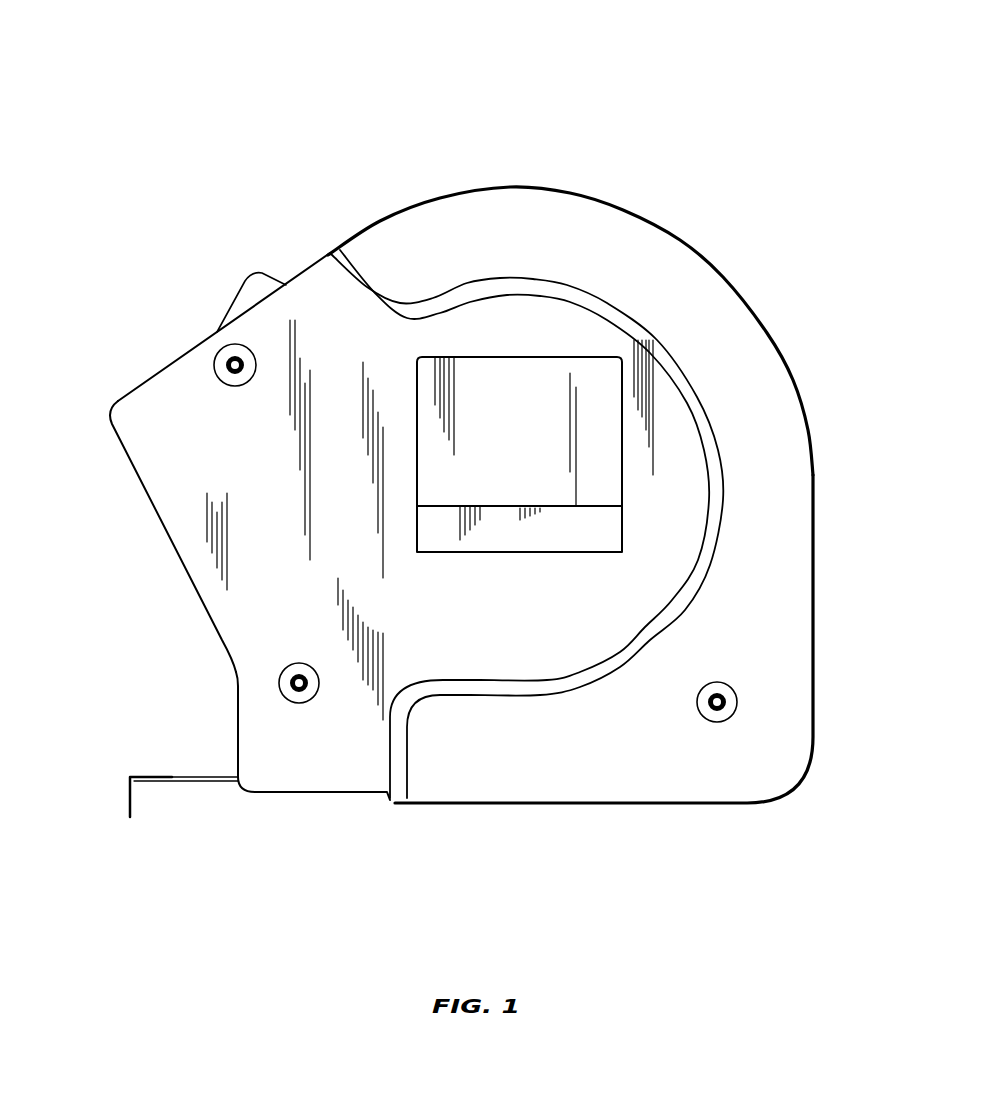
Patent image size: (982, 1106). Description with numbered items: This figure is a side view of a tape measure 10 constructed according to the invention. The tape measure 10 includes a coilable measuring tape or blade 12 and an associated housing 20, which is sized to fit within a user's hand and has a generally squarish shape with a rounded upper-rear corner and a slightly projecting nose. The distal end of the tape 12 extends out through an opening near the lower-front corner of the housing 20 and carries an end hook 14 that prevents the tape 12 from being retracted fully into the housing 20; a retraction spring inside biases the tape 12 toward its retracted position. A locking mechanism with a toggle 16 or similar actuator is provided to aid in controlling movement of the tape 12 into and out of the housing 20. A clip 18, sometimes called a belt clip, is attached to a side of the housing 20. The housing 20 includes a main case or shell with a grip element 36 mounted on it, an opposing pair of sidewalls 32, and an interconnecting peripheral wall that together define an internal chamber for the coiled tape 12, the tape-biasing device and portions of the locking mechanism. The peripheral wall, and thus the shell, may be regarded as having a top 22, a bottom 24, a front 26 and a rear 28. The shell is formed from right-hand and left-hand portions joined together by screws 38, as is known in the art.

The tape measure 10 is at (311, 98).
The tape 12 is at (188, 782).
The end hook 14 is at (130, 810).
The toggle 16 is at (253, 290).
The clip 18 is at (530, 382).
The housing 20 is at (152, 393).
The top 22 is at (307, 270).
The bottom 24 is at (323, 793).
The front 26 is at (238, 712).
The rear 28 is at (783, 480).
The sidewalls 32 is at (485, 650).
The grip element 36 is at (727, 330).
The screws 38 is at (308, 688).